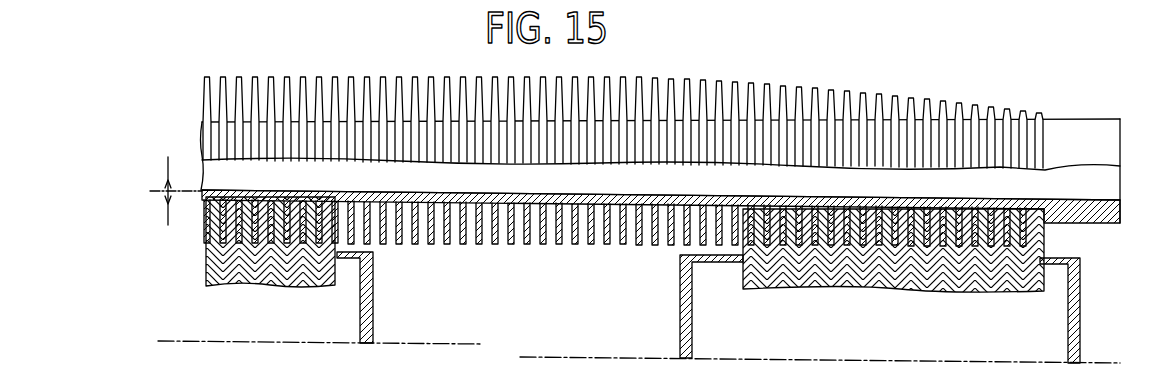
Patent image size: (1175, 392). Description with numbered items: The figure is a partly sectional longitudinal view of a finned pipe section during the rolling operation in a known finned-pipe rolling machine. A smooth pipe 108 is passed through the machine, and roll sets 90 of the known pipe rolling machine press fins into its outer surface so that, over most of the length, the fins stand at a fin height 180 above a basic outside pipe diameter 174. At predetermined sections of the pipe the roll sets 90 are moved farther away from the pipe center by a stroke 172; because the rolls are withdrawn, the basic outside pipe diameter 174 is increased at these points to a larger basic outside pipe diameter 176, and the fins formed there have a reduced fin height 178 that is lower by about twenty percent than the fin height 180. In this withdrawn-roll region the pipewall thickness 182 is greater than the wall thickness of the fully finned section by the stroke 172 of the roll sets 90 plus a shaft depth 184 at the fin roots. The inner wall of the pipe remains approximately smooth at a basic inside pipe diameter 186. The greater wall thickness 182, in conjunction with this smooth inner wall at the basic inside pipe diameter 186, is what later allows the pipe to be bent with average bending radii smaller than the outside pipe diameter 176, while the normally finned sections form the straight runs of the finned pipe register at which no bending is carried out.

The pipewall thickness 182 is at (721, 178).
The basic inside pipe diameter 186 is at (604, 196).
The smooth pipe 108 is at (1092, 226).
The shaft depth 184 is at (160, 191).
The basic outside pipe diameter 174 is at (377, 210).
The basic outside pipe diameter (increased) 176 is at (687, 212).
The reduced fin height 178 is at (647, 242).
The fin height 180 is at (455, 210).
The roll sets 90 is at (343, 313).
The stroke 172 is at (522, 353).